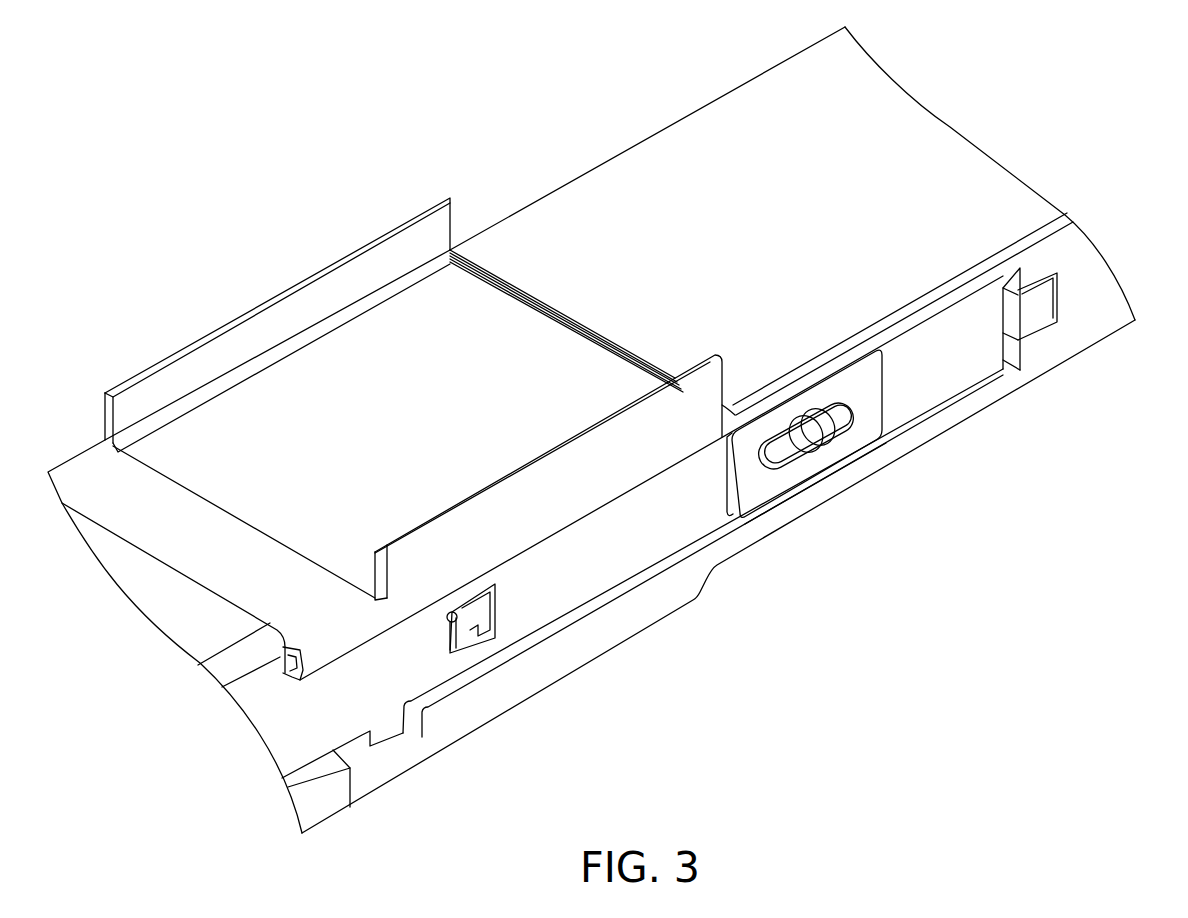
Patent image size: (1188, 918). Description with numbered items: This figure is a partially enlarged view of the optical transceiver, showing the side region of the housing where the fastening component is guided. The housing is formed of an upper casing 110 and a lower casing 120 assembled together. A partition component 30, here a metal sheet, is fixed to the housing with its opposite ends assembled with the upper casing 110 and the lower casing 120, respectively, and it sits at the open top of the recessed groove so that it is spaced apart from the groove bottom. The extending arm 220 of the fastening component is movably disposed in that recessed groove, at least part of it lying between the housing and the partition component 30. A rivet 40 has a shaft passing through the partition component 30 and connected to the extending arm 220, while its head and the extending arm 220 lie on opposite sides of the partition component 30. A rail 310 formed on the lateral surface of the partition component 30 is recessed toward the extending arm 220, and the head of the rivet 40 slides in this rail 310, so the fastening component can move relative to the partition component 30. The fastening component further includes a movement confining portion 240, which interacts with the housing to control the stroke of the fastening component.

The upper casing 110 is at (729, 170).
The lower casing 120 is at (1080, 333).
The extending arm 220 is at (578, 567).
The movement confining portion 240 is at (387, 727).
The partition component 30 is at (867, 400).
The rivet 40 is at (813, 430).
The rail 310 is at (784, 460).